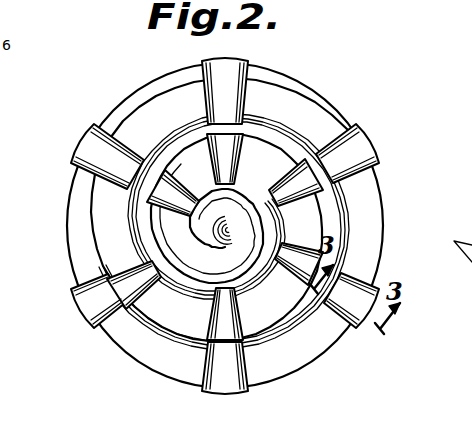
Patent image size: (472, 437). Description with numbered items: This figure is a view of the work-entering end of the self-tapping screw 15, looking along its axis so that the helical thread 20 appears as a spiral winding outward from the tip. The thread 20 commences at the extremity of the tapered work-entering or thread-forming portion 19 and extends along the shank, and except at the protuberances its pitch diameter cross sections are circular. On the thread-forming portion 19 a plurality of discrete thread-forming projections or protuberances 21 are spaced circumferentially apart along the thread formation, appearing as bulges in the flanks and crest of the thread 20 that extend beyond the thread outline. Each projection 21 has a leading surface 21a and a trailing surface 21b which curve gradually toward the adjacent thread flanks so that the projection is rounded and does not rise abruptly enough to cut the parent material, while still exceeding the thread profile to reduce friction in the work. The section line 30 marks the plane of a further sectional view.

The self-tapping screw 15 is at (66, 281).
The tapered portion 19 is at (333, 220).
The helical thread 20 is at (308, 97).
The thread-forming projections 21 is at (225, 226).
The leading surface 21a is at (343, 123).
The trailing surface 21b is at (369, 173).
The bevel lines 30 is at (362, 270).